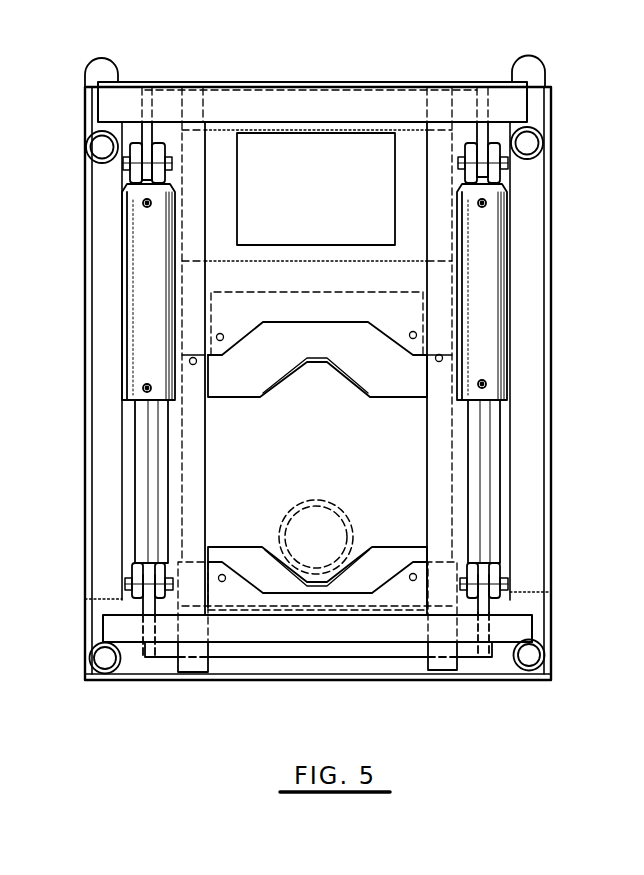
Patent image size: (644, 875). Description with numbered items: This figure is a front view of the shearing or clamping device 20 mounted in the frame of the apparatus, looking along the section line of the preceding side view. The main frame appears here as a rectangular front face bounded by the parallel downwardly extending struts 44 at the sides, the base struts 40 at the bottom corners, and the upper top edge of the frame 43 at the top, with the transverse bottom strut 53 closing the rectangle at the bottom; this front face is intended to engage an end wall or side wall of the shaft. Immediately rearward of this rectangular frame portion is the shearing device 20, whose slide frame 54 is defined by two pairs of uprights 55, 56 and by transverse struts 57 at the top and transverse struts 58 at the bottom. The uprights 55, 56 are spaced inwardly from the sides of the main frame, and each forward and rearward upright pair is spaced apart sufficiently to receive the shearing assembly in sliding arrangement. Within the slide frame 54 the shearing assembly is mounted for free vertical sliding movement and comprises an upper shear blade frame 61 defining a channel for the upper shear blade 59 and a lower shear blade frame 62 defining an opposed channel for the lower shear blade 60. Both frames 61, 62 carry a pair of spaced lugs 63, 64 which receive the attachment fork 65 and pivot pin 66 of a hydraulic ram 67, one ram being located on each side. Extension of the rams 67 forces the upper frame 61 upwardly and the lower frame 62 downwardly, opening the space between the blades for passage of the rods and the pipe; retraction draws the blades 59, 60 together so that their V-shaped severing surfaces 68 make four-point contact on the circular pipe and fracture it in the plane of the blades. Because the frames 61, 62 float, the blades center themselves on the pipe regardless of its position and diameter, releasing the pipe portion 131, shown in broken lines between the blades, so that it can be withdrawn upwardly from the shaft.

The shearing device 20 is at (270, 54).
The base struts 40 is at (99, 658).
The upper top edge of the frame 43 is at (533, 63).
The downwardly extending struts 44 is at (100, 357).
The transverse bottom strut 53 is at (405, 664).
The slide frame 54 is at (195, 663).
The uprights 55 is at (193, 482).
The uprights 56 is at (443, 443).
The transverse struts 57 is at (350, 79).
The transverse struts 58 is at (297, 634).
The upper shear blade 59 is at (410, 378).
The lower shear blade 60 is at (393, 557).
The upper shear blade frame 61 is at (407, 178).
The lower shear blade frame 62 is at (375, 650).
The lug 63 is at (148, 138).
The lug 64 is at (482, 166).
The attachment fork 65 is at (170, 150).
The pivot pin 66 is at (173, 163).
The hydraulic ram 67 is at (134, 300).
The V-shaped severing surfaces 68 is at (347, 382).
The pipe portion 131 is at (327, 507).